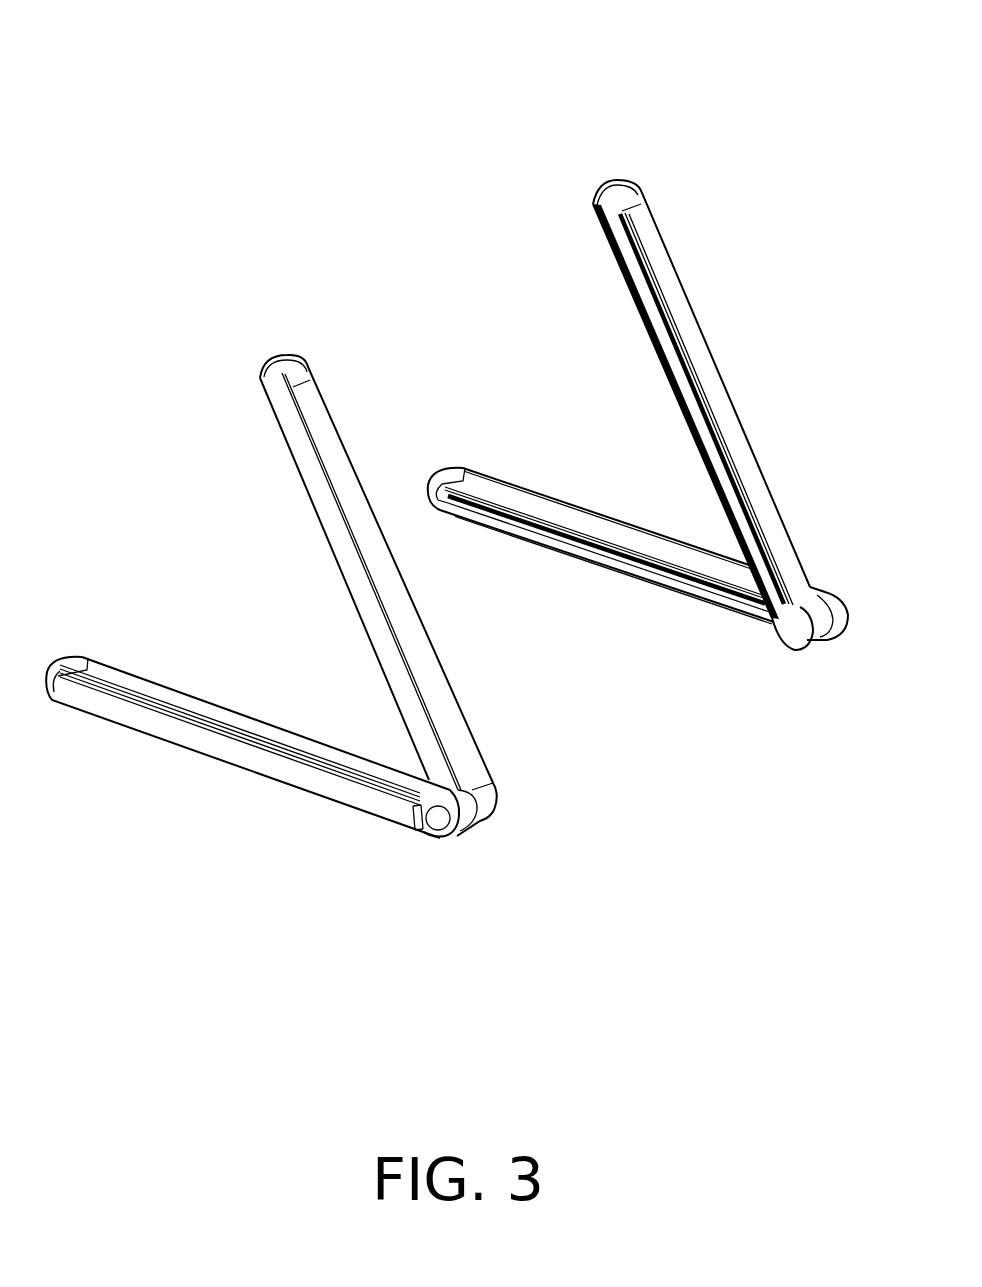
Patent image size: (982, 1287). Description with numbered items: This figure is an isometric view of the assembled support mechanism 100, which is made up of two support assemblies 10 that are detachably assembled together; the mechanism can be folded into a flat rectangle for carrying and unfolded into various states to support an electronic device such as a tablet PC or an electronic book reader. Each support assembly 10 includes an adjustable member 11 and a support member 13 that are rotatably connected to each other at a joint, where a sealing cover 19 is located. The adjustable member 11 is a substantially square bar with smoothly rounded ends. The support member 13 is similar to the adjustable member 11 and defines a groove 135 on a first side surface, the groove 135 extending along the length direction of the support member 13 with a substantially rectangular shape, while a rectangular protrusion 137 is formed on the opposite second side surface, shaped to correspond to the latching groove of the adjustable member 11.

The support mechanism 100 is at (449, 60).
The support assembly 10 is at (735, 340).
The adjustable member 11 is at (333, 517).
The support member 13 is at (158, 693).
The groove 135 is at (552, 538).
The protrusion 137 is at (248, 758).
The sealing cover 19 is at (438, 826).